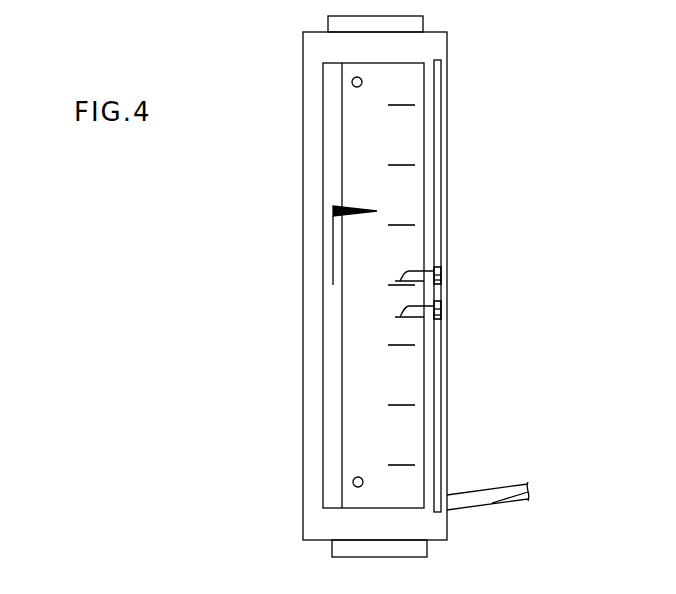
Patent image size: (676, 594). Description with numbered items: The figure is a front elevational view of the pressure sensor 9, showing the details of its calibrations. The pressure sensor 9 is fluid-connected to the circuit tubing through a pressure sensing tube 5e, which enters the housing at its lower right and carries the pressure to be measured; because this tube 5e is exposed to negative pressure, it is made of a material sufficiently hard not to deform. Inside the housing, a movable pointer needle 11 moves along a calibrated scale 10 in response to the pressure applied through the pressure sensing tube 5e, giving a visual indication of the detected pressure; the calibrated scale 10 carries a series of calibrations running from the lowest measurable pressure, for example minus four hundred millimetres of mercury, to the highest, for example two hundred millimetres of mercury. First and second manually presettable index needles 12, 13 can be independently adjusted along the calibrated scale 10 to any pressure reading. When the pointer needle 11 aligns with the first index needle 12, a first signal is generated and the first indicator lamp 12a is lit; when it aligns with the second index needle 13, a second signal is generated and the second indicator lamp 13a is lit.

The pressure sensor 9 is at (450, 60).
The calibrated scale 10 is at (405, 202).
The pointer needle 11 is at (333, 216).
The first manually presettable index needle 12 is at (424, 273).
The first indicator lamp 12a is at (352, 83).
The second manually presettable index needle 13 is at (424, 311).
The second indicator lamp 13a is at (353, 484).
The pressure sensing tube 5e is at (478, 494).